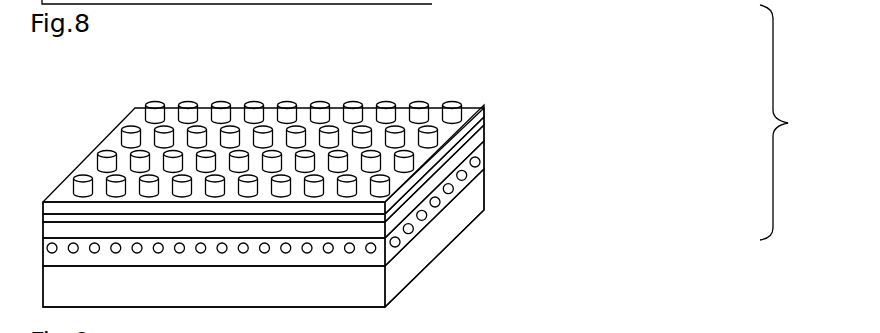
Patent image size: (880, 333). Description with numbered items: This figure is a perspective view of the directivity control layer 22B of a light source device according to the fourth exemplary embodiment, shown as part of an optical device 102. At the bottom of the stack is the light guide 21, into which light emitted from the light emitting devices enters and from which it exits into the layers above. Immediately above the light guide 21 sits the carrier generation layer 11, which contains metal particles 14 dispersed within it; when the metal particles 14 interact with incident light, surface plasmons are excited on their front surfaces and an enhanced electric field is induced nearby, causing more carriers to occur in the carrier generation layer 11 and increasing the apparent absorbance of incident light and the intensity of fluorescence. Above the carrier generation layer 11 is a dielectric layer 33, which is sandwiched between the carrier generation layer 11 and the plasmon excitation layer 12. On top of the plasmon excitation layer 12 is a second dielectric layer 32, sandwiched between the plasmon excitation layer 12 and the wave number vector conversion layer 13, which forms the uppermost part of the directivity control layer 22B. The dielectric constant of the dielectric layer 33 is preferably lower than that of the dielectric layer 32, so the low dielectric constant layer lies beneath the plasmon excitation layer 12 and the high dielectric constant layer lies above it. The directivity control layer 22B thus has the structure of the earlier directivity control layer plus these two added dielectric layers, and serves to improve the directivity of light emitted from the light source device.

The optical device 102 is at (238, 108).
The wave number vector conversion layer 13 is at (455, 102).
The dielectric layer 32 is at (483, 106).
The plasmon excitation layer 12 is at (486, 120).
The dielectric layer 33 is at (476, 140).
The metal particles 14 is at (477, 162).
The carrier generation layer 11 is at (480, 182).
The light guide 21 is at (443, 226).
The directivity control layer 22B is at (788, 125).